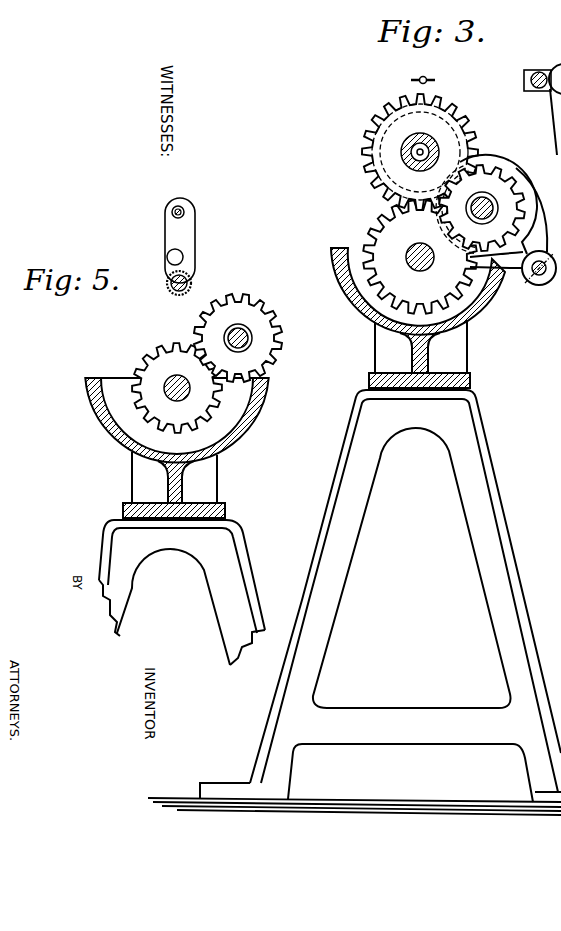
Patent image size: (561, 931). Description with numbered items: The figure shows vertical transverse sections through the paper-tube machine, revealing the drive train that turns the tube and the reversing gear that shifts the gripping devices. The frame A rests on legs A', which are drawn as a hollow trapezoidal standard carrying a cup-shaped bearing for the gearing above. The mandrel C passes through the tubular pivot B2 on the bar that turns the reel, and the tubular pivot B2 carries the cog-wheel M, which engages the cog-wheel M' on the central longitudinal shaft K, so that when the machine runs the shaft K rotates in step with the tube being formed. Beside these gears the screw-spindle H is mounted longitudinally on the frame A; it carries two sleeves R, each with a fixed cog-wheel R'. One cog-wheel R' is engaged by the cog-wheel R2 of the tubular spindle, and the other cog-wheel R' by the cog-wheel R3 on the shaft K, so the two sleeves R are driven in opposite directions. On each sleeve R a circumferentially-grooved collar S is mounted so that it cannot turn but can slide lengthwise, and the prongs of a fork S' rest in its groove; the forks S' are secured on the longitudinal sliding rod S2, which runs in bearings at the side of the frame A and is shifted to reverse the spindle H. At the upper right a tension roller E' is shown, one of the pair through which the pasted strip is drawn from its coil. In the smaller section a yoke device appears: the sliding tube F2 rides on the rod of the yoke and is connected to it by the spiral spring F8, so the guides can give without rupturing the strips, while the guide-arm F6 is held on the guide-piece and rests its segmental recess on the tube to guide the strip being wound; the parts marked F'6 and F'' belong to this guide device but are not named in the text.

In FIG. 3, the frame A is at (418, 318).
In FIG. 5, the frame A is at (177, 448).
In FIG. 3, the legs A' is at (354, 602).
In FIG. 5, the legs A' is at (182, 592).
In FIG. 3, the cog-wheel M is at (423, 152).
In FIG. 3, the cog-wheel M' is at (419, 256).
In FIG. 3, the central longitudinal shaft K is at (427, 267).
In FIG. 5, the central longitudinal shaft K is at (177, 370).
In FIG. 3, the sleeve R is at (487, 209).
In FIG. 5, the sleeve R is at (245, 338).
In FIG. 3, the cog-wheel R' is at (483, 195).
In FIG. 5, the cog-wheel R' is at (243, 338).
In FIG. 3, the cog-wheel R2 is at (468, 131).
In FIG. 5, the cog-wheel R3 is at (177, 388).
In FIG. 3, the tubular pivot B2 is at (417, 160).
In FIG. 3, the mandrel C is at (413, 156).
In FIG. 3, the circumferentially-grooved collar S is at (503, 204).
In FIG. 3, the fork S' is at (514, 243).
In FIG. 3, the longitudinal sliding rod S2 is at (540, 285).
In FIG. 3, the tension or friction roller E' is at (542, 103).
In FIG. 3, the sliding tube F2 is at (423, 73).
In FIG. 5, the guide-arm F6 is at (190, 229).
In FIG. 5, the lever hole F'6 is at (195, 257).
In FIG. 5, the lever pivot pin F'' is at (195, 209).
In FIG. 5, the spiral spring F8 is at (192, 200).
In FIG. 5, the screw-spindle H is at (243, 333).